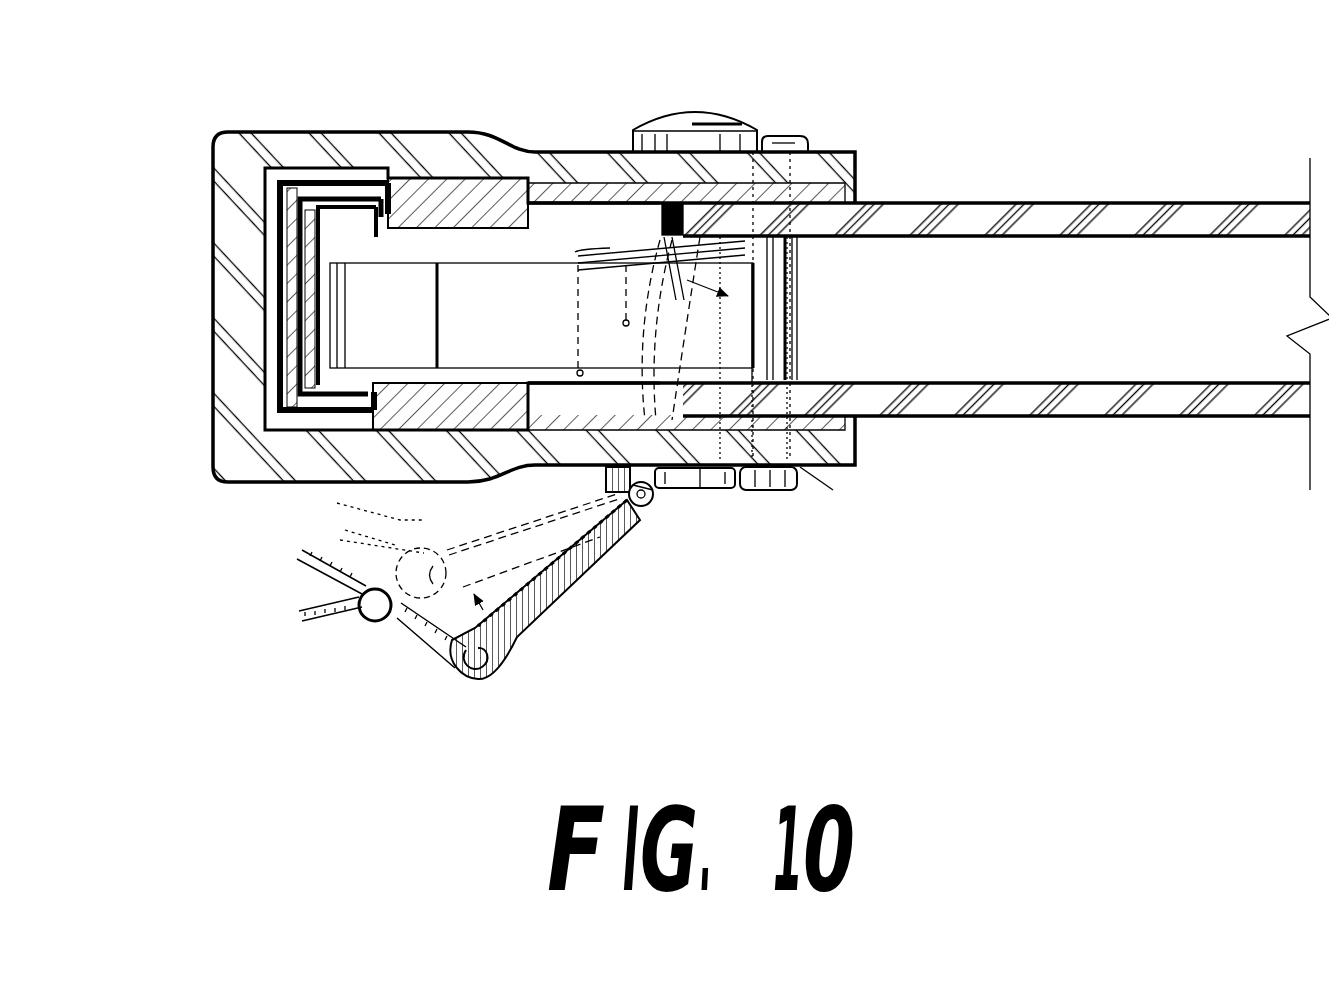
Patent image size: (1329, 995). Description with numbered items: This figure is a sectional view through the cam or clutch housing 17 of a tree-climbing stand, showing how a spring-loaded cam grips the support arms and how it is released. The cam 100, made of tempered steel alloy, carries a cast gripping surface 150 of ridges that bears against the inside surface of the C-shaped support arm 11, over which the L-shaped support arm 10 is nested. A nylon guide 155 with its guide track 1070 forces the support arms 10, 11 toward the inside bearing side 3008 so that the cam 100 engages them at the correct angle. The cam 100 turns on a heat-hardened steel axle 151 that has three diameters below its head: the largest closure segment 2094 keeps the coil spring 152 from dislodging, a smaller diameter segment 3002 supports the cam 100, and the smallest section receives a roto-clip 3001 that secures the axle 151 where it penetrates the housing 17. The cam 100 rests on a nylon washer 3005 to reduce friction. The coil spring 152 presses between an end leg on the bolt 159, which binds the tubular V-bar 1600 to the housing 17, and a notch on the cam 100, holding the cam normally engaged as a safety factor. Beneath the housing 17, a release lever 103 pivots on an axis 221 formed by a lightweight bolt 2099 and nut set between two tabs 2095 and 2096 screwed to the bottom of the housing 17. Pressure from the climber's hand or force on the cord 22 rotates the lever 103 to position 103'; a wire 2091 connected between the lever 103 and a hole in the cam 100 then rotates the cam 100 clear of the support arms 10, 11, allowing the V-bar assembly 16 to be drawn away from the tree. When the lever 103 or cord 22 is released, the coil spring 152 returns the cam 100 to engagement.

The support arm 10 is at (312, 226).
The support arm 11 is at (308, 280).
The V-bar assembly 16 is at (1040, 562).
The clutch housing 17 is at (240, 448).
The cord 22 is at (310, 573).
The cam 100 is at (385, 277).
The release lever 103 is at (558, 589).
The lever released position 103' is at (530, 613).
The bearing surface 150 is at (357, 273).
The axle 151 is at (703, 120).
The coil spring 152 is at (685, 225).
The nylon guide 155 is at (428, 205).
The bolt 159 is at (793, 137).
The axis 221 is at (655, 525).
The guide track 1070 is at (373, 224).
The V-bar tube 1600 is at (898, 418).
The wire 2091 is at (600, 252).
The closure segment 2094 is at (650, 235).
The tab 2095 is at (657, 493).
The tab 2096 is at (627, 480).
The bolt 2099 is at (650, 513).
The roto-clip 3001 is at (723, 480).
The smaller diameter segment 3002 is at (670, 338).
The nylon washer 3005 is at (813, 470).
The bearing side 3008 is at (293, 131).